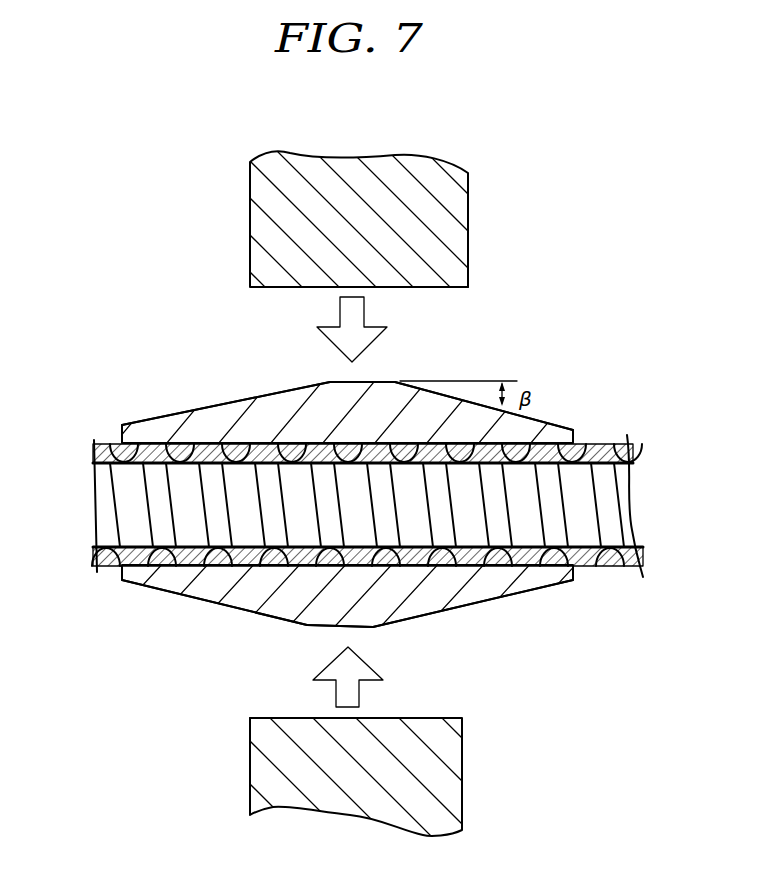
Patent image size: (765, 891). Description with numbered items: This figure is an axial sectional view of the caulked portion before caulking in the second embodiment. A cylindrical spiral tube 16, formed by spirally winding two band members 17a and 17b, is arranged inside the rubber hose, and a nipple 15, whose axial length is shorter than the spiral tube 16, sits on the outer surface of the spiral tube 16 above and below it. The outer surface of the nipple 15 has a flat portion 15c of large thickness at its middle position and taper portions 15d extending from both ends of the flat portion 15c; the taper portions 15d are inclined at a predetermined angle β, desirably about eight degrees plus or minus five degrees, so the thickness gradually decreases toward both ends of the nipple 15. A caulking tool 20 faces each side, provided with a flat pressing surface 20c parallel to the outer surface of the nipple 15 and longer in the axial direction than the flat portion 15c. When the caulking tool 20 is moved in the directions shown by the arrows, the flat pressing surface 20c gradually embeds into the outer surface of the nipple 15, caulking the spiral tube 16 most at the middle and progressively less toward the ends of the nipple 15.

The nipple 15 is at (145, 423).
The flat portion 15c is at (365, 380).
The taper portions 15d is at (218, 405).
The spiral tube 16 is at (97, 567).
The band member 17a is at (598, 445).
The band member 17b is at (588, 565).
The caulking tool 20 is at (468, 205).
The flat pressing surface 20c is at (454, 288).